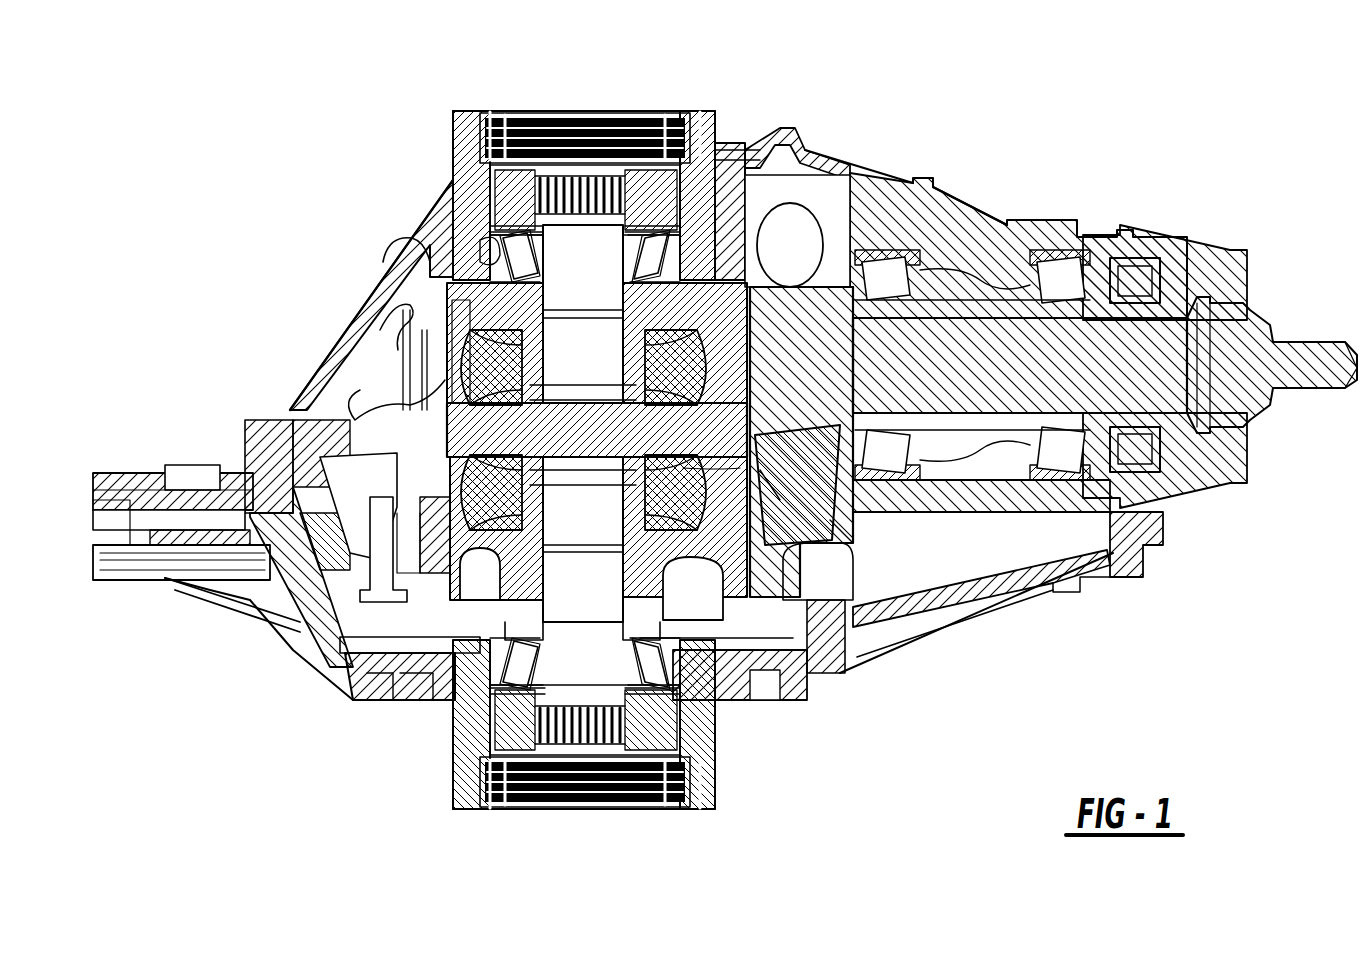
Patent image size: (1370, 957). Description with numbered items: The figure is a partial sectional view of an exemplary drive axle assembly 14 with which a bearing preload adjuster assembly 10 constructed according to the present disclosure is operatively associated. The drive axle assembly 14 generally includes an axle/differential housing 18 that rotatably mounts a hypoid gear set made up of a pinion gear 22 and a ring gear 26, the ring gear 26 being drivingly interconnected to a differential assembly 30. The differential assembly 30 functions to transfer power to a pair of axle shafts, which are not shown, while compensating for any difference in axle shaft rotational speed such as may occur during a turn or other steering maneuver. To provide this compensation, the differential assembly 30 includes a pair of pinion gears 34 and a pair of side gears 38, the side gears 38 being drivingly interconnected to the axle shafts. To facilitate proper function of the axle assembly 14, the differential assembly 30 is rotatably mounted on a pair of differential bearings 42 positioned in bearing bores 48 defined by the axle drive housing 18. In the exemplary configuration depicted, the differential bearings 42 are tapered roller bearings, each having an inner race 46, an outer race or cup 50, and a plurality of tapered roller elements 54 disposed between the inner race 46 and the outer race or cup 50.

The bearing preload adjuster assembly 10 is at (715, 163).
The drive axle assembly 14 is at (980, 170).
The axle/differential housing 18 is at (445, 215).
The pinion gear 22 is at (807, 310).
The ring gear 26 is at (803, 490).
The differential assembly 30 is at (448, 508).
The pinion gears 34 is at (455, 490).
The side gears 38 is at (467, 323).
The differential bearings 42 is at (700, 258).
The inner race 46 is at (508, 333).
The bearing bores 48 is at (502, 238).
The outer race or cup 50 is at (497, 250).
The tapered roller elements 54 is at (745, 175).